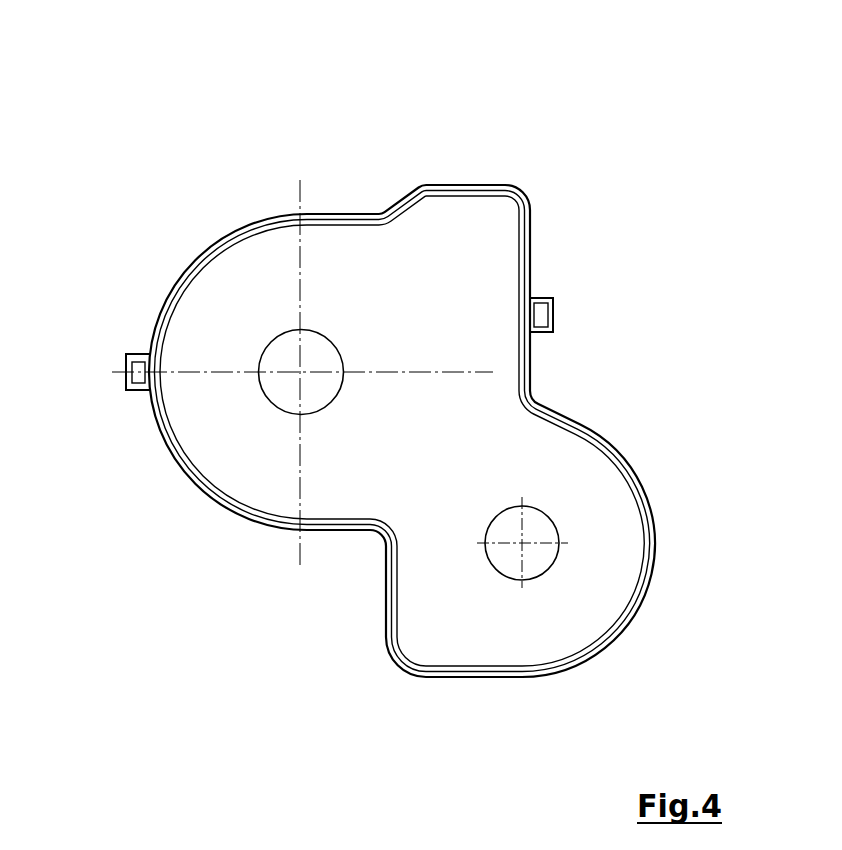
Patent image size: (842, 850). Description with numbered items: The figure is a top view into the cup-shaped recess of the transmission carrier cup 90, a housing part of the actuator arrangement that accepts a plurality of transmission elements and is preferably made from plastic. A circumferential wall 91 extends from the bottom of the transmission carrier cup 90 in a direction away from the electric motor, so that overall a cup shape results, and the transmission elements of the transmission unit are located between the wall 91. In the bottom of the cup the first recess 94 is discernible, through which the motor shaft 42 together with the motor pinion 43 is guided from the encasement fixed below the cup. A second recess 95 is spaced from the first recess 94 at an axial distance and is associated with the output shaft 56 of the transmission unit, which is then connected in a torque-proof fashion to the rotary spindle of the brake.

The transmission carrier cup 90 is at (355, 340).
The circumferential wall 91 is at (178, 275).
The output shaft 56 is at (199, 411).
The recess 95 is at (273, 392).
The motor shaft 42 is at (633, 521).
The motor pinion 43 is at (633, 521).
The first recess 94 is at (523, 542).